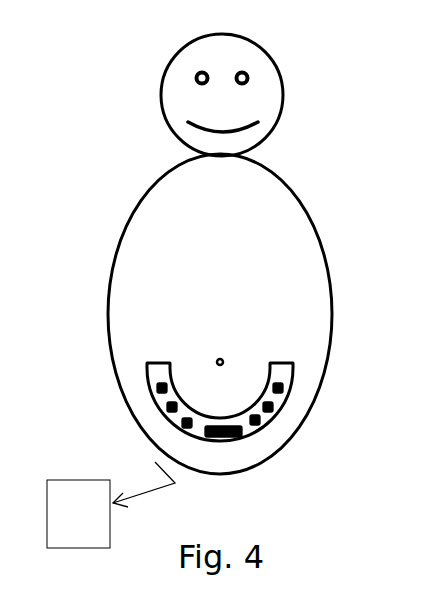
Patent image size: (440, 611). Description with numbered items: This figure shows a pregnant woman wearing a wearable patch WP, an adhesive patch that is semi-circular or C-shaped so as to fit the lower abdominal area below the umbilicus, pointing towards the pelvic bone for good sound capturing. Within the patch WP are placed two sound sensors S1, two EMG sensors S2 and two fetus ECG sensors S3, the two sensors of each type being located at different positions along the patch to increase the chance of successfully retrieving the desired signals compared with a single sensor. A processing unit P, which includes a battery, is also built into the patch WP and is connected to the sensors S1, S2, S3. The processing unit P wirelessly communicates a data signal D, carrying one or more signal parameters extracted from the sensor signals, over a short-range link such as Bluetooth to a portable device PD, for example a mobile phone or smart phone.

The wearable patch WP is at (287, 375).
The sound sensor S1 is at (157, 391).
The EMG sensor S2 is at (168, 408).
The fetus ECG sensor S3 is at (183, 425).
The processing unit P is at (237, 435).
The data signal D is at (146, 495).
The portable device PD is at (78, 514).